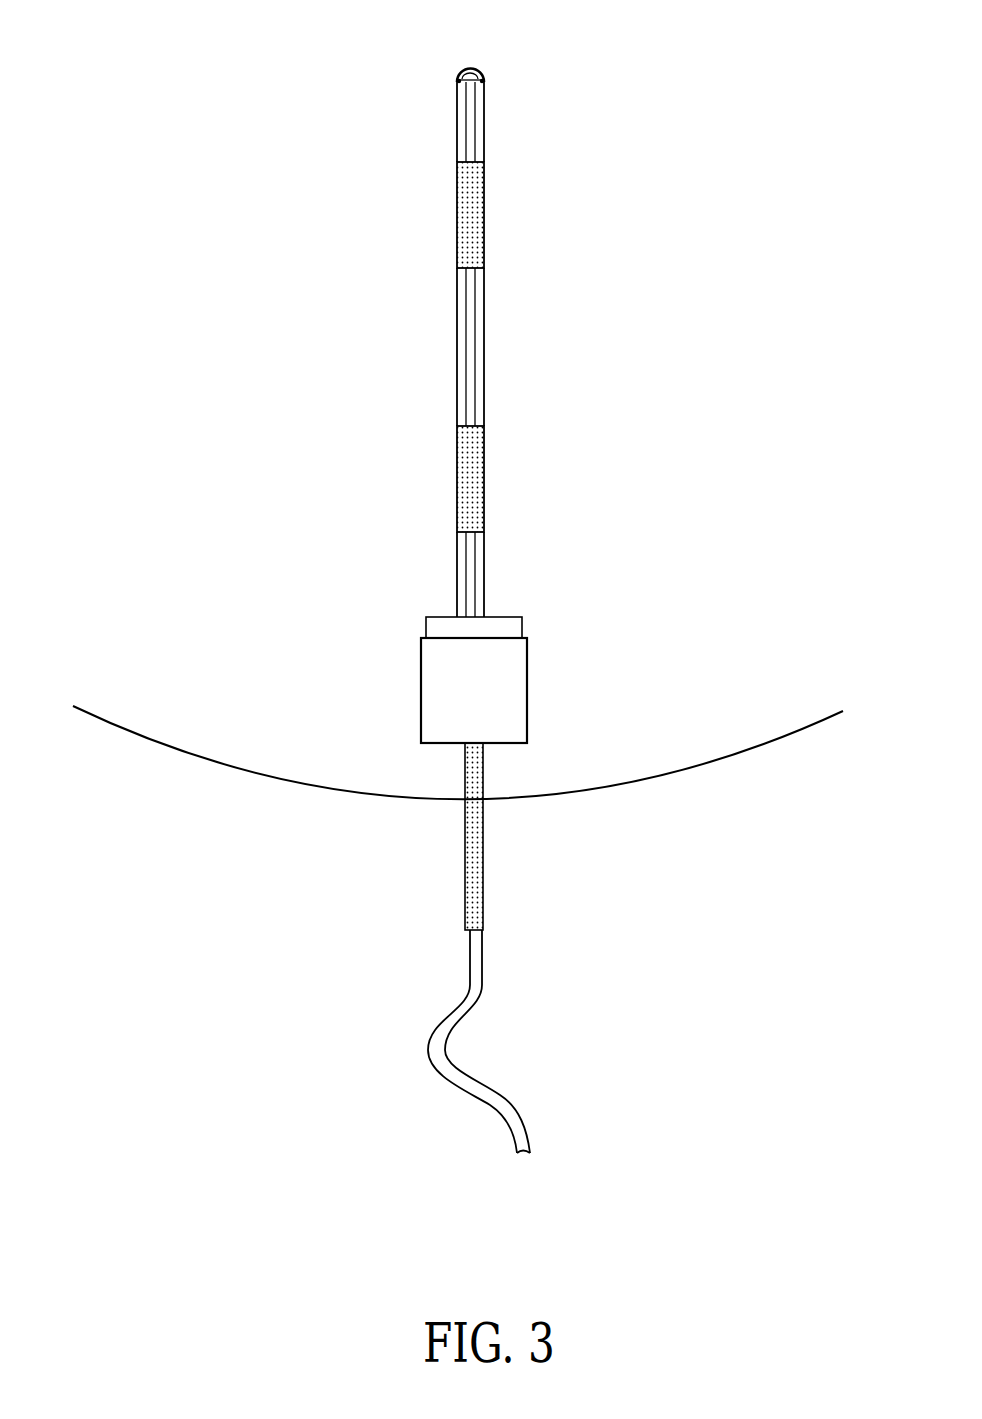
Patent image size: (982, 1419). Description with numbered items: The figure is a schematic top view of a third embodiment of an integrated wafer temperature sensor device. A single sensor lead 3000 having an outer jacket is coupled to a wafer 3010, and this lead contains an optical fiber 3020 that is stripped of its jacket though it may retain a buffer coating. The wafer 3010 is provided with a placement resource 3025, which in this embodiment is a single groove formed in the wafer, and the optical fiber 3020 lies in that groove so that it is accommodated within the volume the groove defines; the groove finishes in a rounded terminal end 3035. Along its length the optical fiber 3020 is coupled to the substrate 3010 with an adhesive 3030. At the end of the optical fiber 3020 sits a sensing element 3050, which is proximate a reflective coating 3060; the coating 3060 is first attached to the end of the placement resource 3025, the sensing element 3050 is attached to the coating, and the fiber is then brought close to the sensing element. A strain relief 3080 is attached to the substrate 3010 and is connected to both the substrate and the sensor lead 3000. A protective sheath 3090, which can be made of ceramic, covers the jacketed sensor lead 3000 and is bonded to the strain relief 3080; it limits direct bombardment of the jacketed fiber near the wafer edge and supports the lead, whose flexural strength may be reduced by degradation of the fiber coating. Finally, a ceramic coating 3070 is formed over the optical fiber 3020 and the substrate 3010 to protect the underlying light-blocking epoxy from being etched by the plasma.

The single sensor lead 3000 is at (423, 1047).
The wafer 3010 is at (275, 609).
The optical fiber 3020 is at (472, 570).
The placement resource 3025 is at (478, 312).
The adhesive 3030 is at (472, 192).
The rounded terminal end 3035 is at (462, 68).
The sensing element 3050 is at (481, 83).
The reflective coating 3060 is at (480, 74).
The ceramic coating 3070 is at (503, 625).
The strain relief 3080 is at (493, 733).
The protective sheath 3090 is at (472, 863).